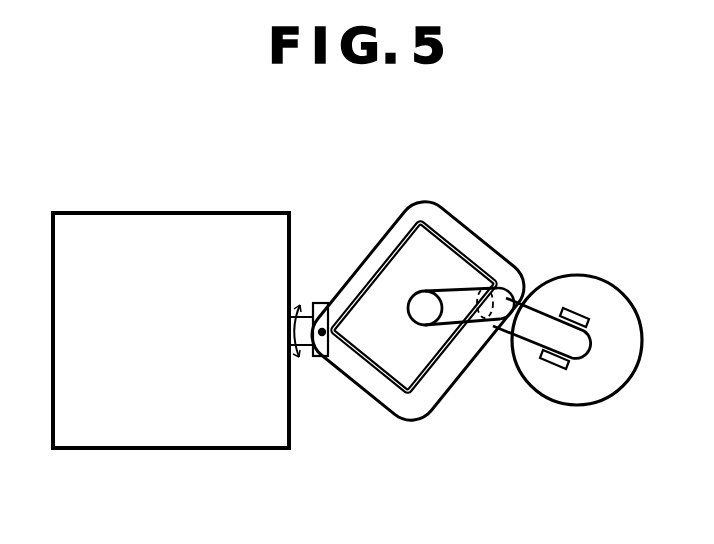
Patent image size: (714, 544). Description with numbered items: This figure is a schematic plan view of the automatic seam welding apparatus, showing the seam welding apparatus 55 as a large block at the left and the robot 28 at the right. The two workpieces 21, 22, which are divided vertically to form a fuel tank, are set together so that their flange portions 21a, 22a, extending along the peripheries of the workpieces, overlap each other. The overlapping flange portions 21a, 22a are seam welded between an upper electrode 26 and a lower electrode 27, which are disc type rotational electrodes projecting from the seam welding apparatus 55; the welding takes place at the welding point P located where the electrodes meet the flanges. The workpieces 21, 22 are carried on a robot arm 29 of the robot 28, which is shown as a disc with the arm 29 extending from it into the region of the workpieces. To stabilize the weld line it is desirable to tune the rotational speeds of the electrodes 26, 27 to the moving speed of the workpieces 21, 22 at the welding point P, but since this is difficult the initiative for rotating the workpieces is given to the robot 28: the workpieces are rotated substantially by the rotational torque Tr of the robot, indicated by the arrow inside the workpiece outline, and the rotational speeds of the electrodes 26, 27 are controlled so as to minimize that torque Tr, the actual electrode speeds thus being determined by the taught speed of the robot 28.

The seam welding apparatus 55 is at (168, 449).
The upper electrode 26 is at (318, 357).
The lower electrode 27 is at (332, 365).
The welding point P is at (322, 330).
The flange portion 21a is at (395, 216).
The flange portion 22a is at (417, 286).
The workpiece 21 is at (432, 256).
The workpiece 22 is at (443, 285).
The rotational torque of the robot Tr is at (402, 278).
The robot arm 29 is at (507, 320).
The robot 28 is at (615, 367).